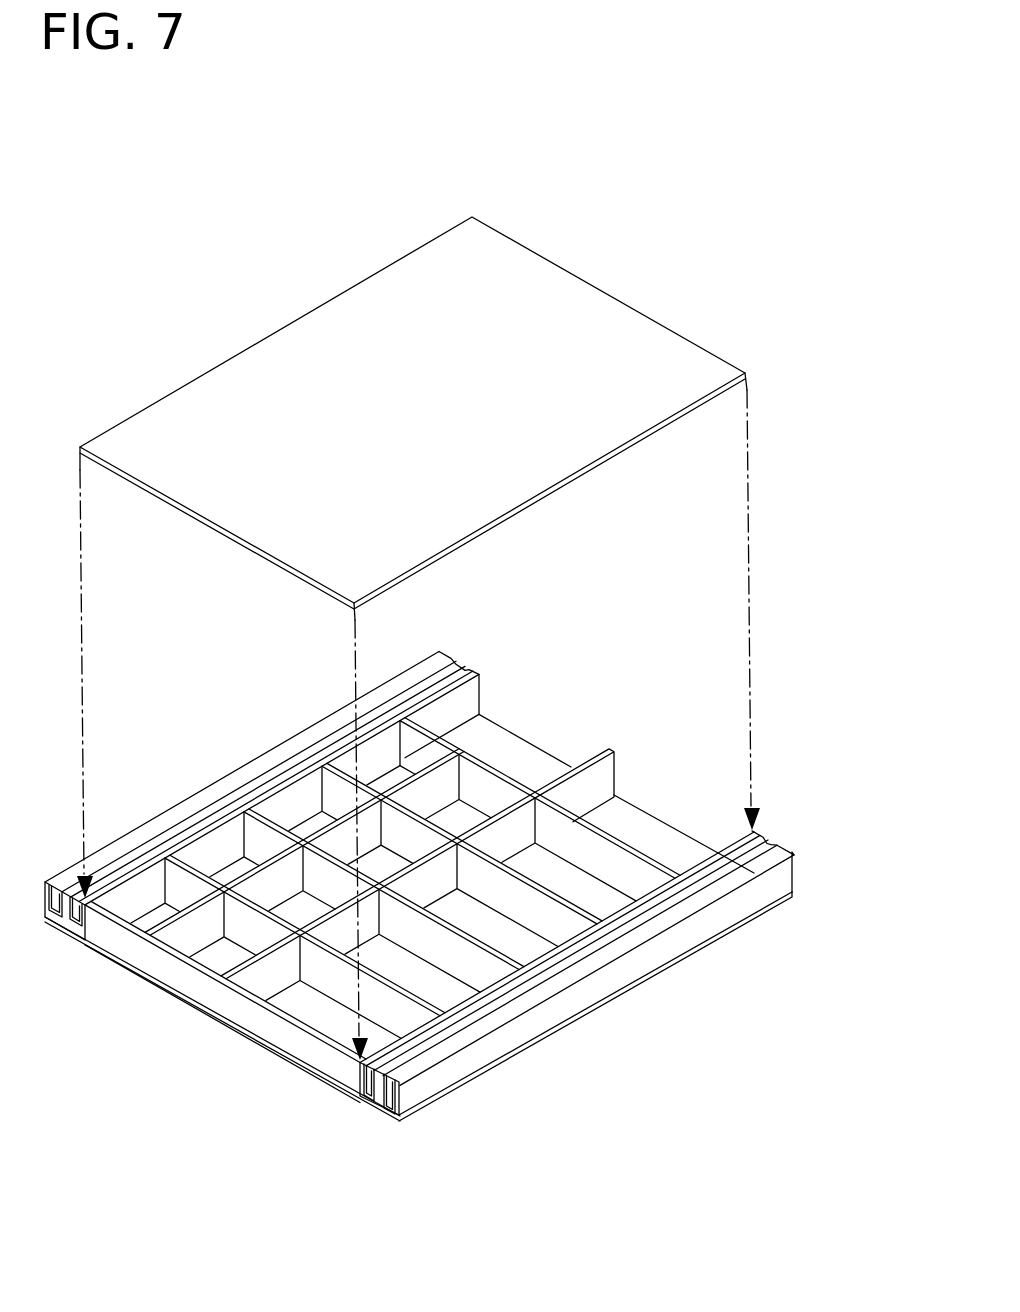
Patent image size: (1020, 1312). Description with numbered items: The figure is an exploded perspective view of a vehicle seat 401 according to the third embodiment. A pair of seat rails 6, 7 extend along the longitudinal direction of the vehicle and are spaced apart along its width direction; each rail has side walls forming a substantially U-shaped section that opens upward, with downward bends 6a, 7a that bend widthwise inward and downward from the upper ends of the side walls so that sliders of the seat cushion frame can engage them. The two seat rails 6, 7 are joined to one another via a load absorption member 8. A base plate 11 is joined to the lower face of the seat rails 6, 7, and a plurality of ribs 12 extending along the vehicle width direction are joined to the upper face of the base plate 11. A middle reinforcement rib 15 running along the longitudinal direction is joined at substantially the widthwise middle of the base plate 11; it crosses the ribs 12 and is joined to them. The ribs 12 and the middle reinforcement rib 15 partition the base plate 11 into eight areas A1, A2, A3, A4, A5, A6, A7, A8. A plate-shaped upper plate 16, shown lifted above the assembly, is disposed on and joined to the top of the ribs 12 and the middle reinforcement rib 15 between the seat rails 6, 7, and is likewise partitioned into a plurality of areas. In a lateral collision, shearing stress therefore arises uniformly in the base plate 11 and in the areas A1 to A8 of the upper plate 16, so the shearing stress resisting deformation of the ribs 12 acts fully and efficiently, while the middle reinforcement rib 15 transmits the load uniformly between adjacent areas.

The vehicle seat 401 is at (786, 462).
The upper plate 16 is at (583, 311).
The seat rail 6 is at (446, 651).
The downward bend 6a is at (71, 920).
The seat rail 7 is at (783, 870).
The downward bend 7a is at (387, 1105).
The load absorption member 8 is at (530, 713).
The base plate 11 is at (655, 810).
The ribs 12 is at (342, 1085).
The middle reinforcement rib 15 is at (618, 768).
The area A1 is at (157, 918).
The area A2 is at (240, 877).
The area A3 is at (308, 823).
The area A4 is at (430, 789).
The area A5 is at (305, 1000).
The area A6 is at (410, 975).
The area A7 is at (505, 935).
The area A8 is at (548, 878).